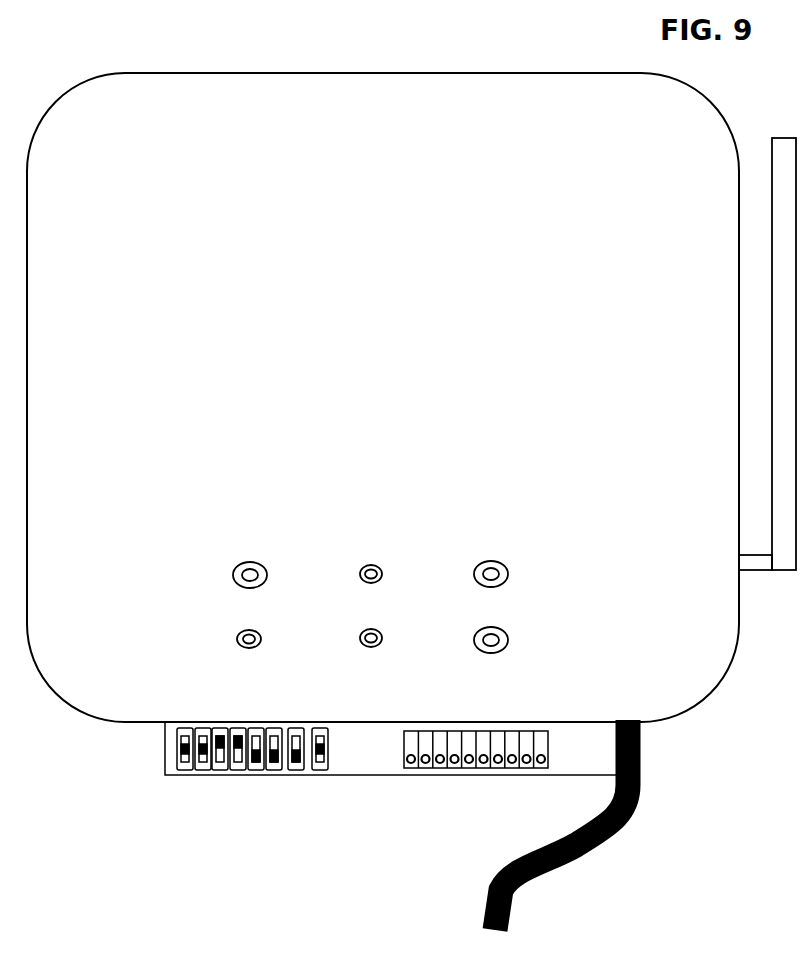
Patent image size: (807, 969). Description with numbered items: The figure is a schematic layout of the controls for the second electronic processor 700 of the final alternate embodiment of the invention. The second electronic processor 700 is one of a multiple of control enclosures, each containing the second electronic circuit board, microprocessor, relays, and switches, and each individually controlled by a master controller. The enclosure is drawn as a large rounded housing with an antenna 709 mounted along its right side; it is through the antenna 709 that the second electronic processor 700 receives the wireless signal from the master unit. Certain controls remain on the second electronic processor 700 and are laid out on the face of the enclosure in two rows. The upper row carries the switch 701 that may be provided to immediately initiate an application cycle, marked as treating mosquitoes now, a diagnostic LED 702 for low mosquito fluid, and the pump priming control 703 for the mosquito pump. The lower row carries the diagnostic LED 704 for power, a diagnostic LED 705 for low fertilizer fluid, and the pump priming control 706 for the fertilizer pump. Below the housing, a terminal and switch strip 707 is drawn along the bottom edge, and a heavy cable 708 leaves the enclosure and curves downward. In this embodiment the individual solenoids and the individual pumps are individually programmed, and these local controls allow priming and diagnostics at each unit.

The second electronic processor 700 is at (84, 87).
The switch to immediately initiate an application cycle 701 is at (233, 565).
The diagnostic LED 702 is at (380, 565).
The pump priming control 703 is at (505, 563).
The diagnostic LED 704 is at (235, 633).
The diagnostic LED 705 is at (381, 630).
The pump priming control 706 is at (508, 630).
The terminal strip / switch block 707 is at (463, 775).
The power cable 708 is at (517, 874).
The antenna 709 is at (782, 137).